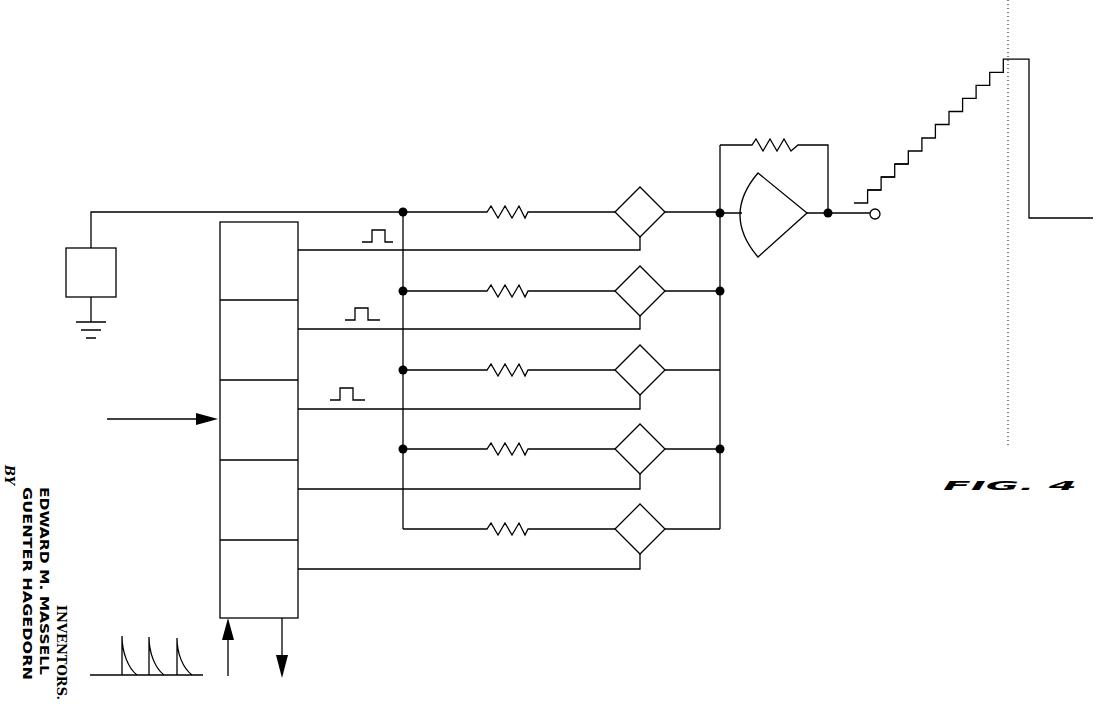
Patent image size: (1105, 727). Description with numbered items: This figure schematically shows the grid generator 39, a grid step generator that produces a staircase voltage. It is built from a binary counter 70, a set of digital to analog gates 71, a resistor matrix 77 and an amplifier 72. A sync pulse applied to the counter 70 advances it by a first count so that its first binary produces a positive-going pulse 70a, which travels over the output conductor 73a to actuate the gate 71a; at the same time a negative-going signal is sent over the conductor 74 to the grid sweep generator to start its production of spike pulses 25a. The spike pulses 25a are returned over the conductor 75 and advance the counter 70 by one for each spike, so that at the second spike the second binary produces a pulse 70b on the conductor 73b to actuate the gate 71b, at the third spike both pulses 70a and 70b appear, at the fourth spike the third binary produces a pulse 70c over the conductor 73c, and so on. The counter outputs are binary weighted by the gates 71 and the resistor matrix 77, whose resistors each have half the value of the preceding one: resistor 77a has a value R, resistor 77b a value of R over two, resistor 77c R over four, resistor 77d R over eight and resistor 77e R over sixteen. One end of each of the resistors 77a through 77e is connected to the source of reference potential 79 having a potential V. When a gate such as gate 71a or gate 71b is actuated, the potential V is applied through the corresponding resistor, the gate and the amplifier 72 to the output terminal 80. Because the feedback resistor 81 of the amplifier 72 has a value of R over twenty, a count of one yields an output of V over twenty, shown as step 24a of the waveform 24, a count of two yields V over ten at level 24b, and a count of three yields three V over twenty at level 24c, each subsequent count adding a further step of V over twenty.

The grid generator 39 is at (585, 131).
The source of reference potential 79 is at (66, 251).
The binary counter 70 is at (218, 357).
The positive-going pulse 70a is at (371, 242).
The pulse 70b is at (354, 320).
The pulse 70c is at (354, 399).
The output conductor 73a is at (310, 250).
The conductor 73b is at (310, 329).
The conductor 73c is at (310, 409).
The conductor 74 is at (284, 648).
The conductor 75 is at (229, 657).
The resistor matrix 77 is at (543, 598).
The resistor 77a is at (507, 209).
The resistor 77b is at (507, 288).
The resistor 77c is at (507, 367).
The resistor 77d is at (507, 446).
The resistor 77e is at (507, 526).
The digital to analog gates 71 is at (665, 598).
The gate 71a is at (645, 194).
The gate 71b is at (645, 273).
The amplifier 72 is at (770, 245).
The feedback resistor 81 is at (778, 149).
The output terminal 80 is at (879, 218).
The waveform 24 is at (970, 198).
The step 24a is at (879, 189).
The level 24b is at (892, 176).
The level 24c is at (906, 163).
The spike pulses 25a is at (146, 668).